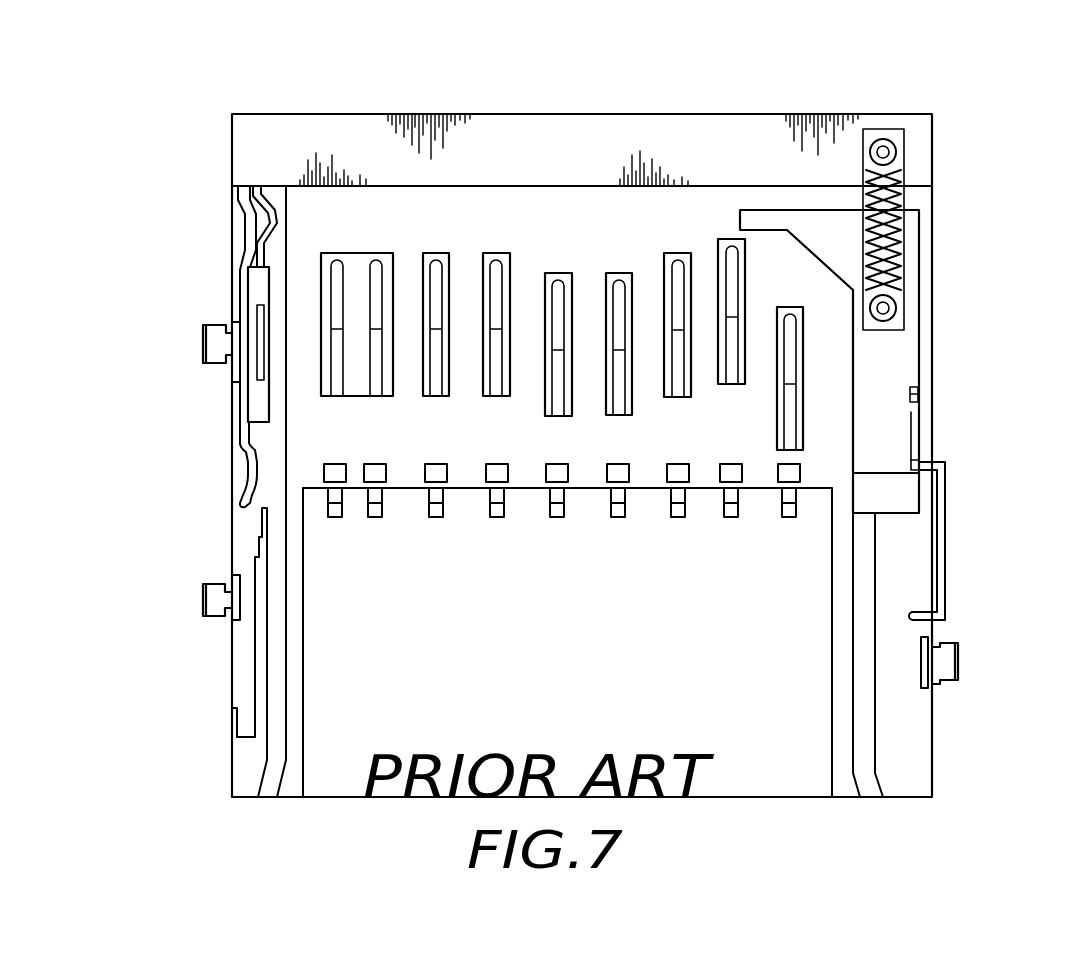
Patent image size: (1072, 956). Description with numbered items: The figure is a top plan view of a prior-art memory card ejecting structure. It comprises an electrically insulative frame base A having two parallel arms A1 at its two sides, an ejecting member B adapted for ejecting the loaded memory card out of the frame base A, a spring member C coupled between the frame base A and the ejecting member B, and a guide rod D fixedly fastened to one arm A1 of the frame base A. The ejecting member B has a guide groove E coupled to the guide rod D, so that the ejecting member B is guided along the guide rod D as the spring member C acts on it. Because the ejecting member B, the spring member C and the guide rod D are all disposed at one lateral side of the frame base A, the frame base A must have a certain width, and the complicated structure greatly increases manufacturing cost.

The frame base A is at (203, 112).
The arm A1 is at (905, 756).
The ejecting member B is at (890, 368).
The spring member C is at (940, 252).
The guide rod D is at (945, 562).
The guide groove E is at (913, 424).